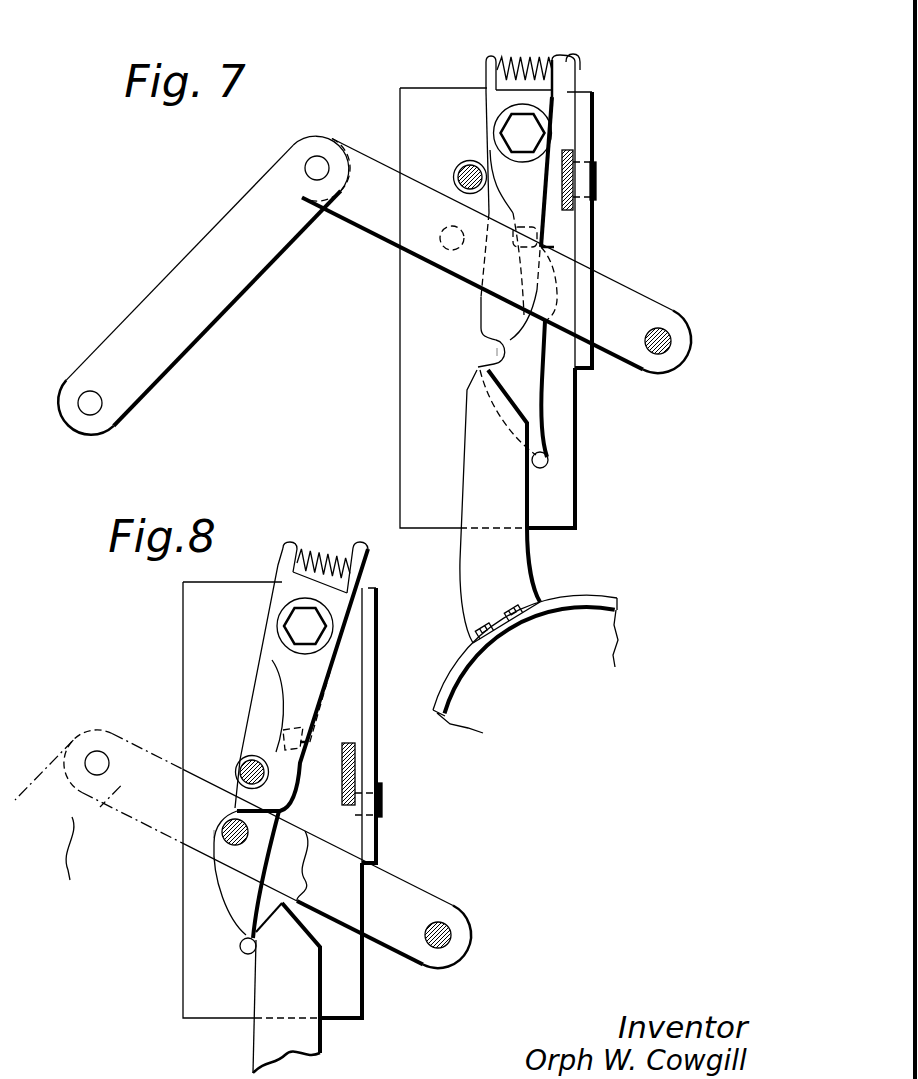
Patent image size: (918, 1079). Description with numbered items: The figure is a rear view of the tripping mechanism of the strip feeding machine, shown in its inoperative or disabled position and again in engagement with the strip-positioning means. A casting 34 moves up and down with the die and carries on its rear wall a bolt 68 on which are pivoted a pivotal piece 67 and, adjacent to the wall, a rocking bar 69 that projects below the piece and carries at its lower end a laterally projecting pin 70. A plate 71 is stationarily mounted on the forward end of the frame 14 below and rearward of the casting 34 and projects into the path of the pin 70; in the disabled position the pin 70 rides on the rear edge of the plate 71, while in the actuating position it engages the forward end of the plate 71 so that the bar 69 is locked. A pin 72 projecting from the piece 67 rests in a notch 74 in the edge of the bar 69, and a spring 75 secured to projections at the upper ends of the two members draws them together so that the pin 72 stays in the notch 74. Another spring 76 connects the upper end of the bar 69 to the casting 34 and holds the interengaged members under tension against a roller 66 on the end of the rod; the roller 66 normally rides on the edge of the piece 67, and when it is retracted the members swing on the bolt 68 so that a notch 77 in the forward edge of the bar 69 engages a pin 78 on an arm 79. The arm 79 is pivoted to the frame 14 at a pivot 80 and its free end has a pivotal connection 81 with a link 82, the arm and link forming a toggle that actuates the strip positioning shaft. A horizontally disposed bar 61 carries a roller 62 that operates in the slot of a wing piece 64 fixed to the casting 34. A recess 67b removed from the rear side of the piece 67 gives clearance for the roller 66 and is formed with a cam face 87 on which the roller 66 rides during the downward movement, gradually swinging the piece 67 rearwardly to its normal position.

In FIG. 7, the frame 14 is at (614, 604).
In FIG. 7, the casting 34 is at (400, 420).
In FIG. 8, the casting 34 is at (183, 676).
In FIG. 7, the horizontally disposed bar 61 is at (575, 157).
In FIG. 8, the horizontally disposed bar 61 is at (358, 748).
In FIG. 7, the roller 62 is at (597, 181).
In FIG. 8, the roller 62 is at (383, 795).
In FIG. 7, the wing piece 64 is at (592, 142).
In FIG. 8, the wing piece 64 is at (378, 641).
In FIG. 7, the roller 66 is at (463, 166).
In FIG. 8, the roller 66 is at (236, 772).
In FIG. 7, the pivotal piece 67 is at (528, 197).
In FIG. 8, the pivotal piece 67 is at (301, 676).
In FIG. 7, the recess 67b is at (486, 300).
In FIG. 8, the recess 67b is at (264, 727).
In FIG. 7, the bolt 68 is at (530, 133).
In FIG. 8, the bolt 68 is at (298, 626).
In FIG. 7, the rocking bar 69 is at (530, 387).
In FIG. 8, the rocking bar 69 is at (226, 893).
In FIG. 7, the pin 70 is at (548, 461).
In FIG. 8, the pin 70 is at (240, 950).
In FIG. 7, the plate 71 is at (500, 506).
In FIG. 8, the plate 71 is at (286, 988).
In FIG. 7, the pin 72 is at (552, 247).
In FIG. 8, the pin 72 is at (304, 742).
In FIG. 7, the notch 74 is at (533, 228).
In FIG. 7, the spring 75 is at (510, 56).
In FIG. 8, the spring 75 is at (300, 546).
In FIG. 7, the spring 76 is at (573, 52).
In FIG. 7, the notch 77 is at (488, 352).
In FIG. 8, the notch 77 is at (205, 836).
In FIG. 7, the pin 78 is at (441, 242).
In FIG. 8, the pin 78 is at (222, 830).
In FIG. 7, the arm 79 is at (618, 356).
In FIG. 8, the arm 79 is at (402, 896).
In FIG. 7, the pivot 80 is at (668, 338).
In FIG. 8, the pivot 80 is at (452, 935).
In FIG. 7, the pivotal connection 81 is at (318, 162).
In FIG. 8, the pivotal connection 81 is at (97, 763).
In FIG. 7, the link 82 is at (205, 322).
In FIG. 8, the link 82 is at (68, 823).
In FIG. 7, the cam face 87 is at (503, 205).
In FIG. 8, the cam face 87 is at (275, 684).